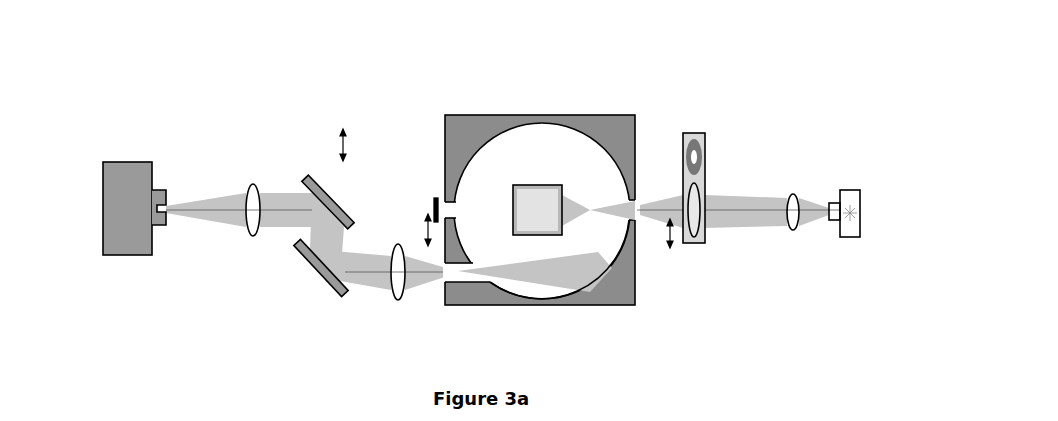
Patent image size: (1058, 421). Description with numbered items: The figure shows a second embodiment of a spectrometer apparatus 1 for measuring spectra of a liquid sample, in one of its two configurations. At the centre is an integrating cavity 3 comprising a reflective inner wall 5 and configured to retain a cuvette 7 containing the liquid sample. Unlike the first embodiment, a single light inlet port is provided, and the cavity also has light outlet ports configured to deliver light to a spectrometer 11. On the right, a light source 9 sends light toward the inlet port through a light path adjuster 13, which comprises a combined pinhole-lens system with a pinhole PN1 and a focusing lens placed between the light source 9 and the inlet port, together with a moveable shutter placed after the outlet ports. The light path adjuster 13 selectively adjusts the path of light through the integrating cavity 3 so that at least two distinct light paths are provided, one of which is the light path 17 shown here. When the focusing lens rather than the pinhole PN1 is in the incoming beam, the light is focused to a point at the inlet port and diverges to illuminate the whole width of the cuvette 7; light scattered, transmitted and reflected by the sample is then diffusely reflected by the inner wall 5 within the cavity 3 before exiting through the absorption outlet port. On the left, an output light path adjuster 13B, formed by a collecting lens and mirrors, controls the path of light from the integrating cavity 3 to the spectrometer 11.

The spectrometer apparatus 1 is at (366, 66).
The integrating cavity 3 is at (503, 123).
The reflective inner wall 5 is at (484, 143).
The cuvette 7 is at (538, 190).
The light source 9 is at (862, 193).
The spectrometer 11 is at (110, 196).
The light path adjuster 13 is at (706, 317).
The output light path adjuster 13B is at (310, 322).
The light path 17 is at (553, 273).
The pinhole PN1 is at (698, 145).